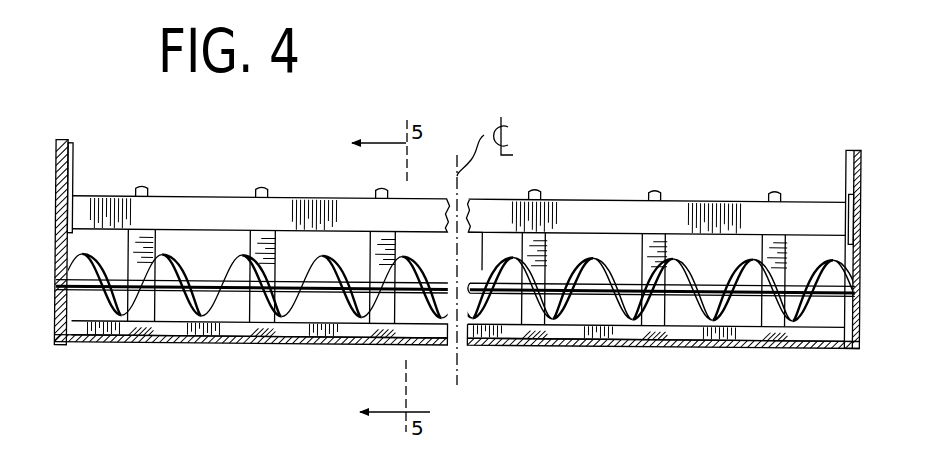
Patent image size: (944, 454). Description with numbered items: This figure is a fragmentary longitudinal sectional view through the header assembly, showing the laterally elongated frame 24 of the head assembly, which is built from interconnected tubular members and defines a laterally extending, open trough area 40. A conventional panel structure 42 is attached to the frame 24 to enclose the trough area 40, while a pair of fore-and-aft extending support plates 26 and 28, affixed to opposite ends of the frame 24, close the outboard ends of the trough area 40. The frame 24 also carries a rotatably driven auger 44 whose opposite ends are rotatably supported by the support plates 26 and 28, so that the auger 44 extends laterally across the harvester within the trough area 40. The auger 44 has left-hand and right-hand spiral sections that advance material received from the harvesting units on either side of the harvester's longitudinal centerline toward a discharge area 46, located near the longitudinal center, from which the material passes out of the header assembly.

The frame 24 is at (181, 194).
The support plate 26 is at (72, 144).
The support plate 28 is at (850, 168).
The trough area 40 is at (320, 305).
The panel structure 42 is at (250, 346).
The auger 44 is at (264, 270).
The discharge area 46 is at (476, 250).